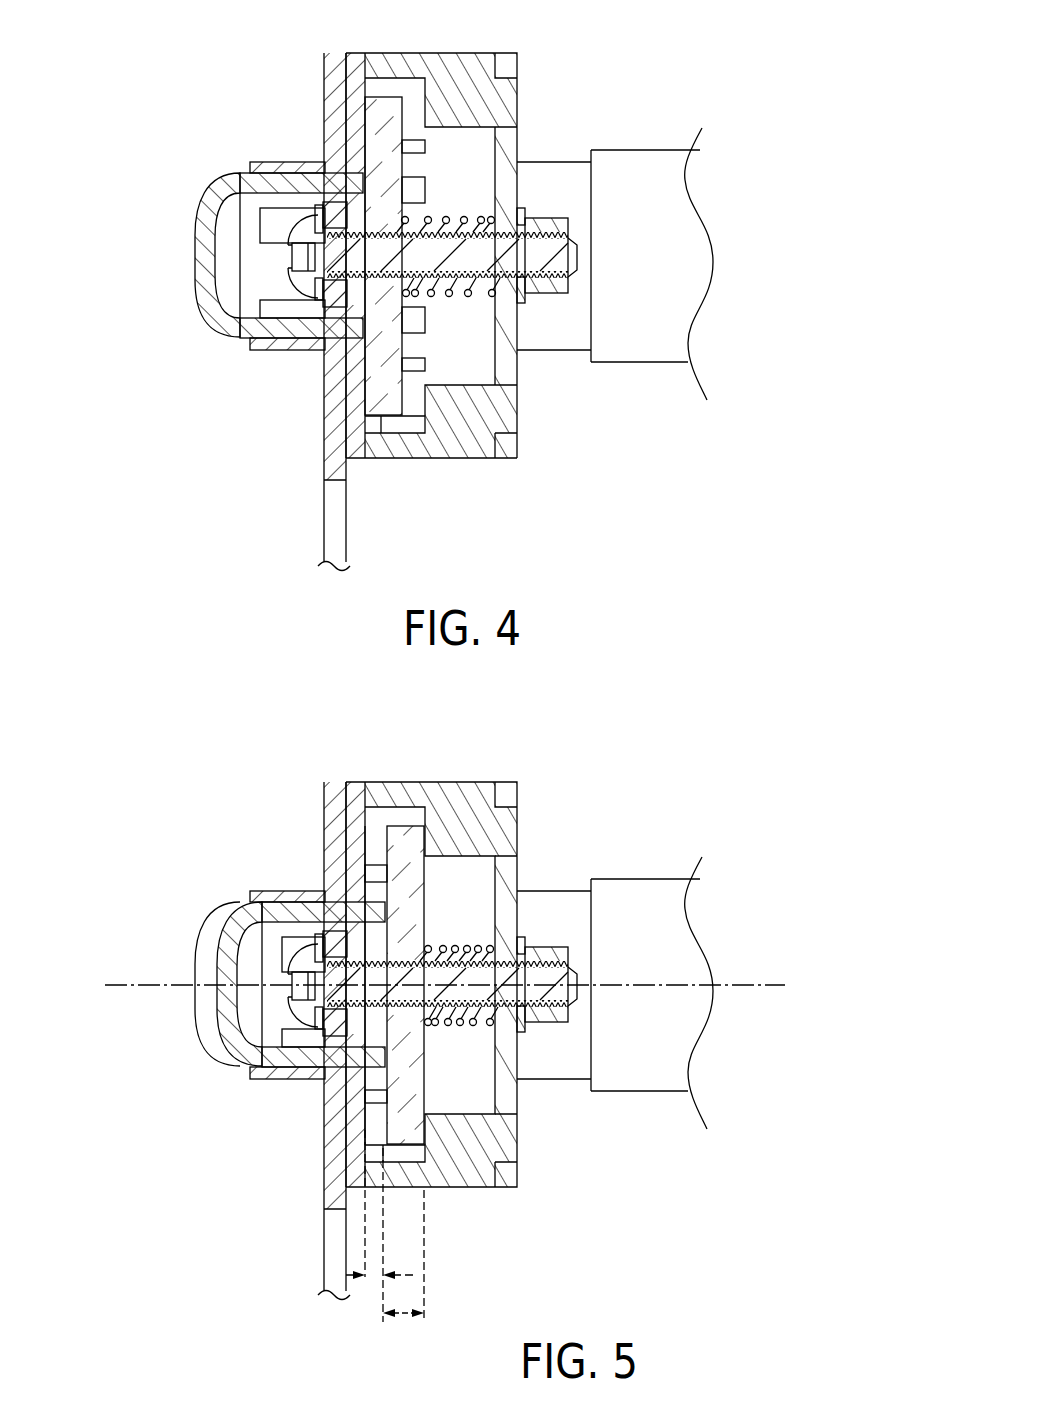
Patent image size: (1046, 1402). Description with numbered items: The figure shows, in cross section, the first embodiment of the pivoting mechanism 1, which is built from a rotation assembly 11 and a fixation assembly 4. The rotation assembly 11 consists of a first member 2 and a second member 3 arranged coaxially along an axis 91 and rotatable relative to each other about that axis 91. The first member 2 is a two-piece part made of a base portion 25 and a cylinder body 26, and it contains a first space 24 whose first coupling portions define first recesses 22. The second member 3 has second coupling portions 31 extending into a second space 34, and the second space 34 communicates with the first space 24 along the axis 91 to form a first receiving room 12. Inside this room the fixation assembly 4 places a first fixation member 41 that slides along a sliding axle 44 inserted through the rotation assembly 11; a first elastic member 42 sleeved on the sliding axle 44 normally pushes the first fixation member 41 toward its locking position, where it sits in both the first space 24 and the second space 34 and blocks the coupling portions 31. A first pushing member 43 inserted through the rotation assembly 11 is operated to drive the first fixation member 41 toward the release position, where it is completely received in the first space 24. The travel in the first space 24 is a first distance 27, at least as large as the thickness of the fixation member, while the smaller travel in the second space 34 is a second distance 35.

In FIG. 4, the pivoting mechanism 1 is at (296, 60).
In FIG. 4, the first member 2 is at (372, 53).
In FIG. 4, the second member 3 is at (648, 40).
In FIG. 4, the fixation assembly 4 is at (273, 258).
In FIG. 4, the rotation assembly 11 is at (683, 20).
In FIG. 5, the first receiving room 12 is at (428, 918).
In FIG. 4, the first recess 22 is at (416, 425).
In FIG. 5, the first space 24 is at (430, 942).
In FIG. 4, the base portion 25 is at (516, 68).
In FIG. 4, the cylinder body 26 is at (457, 57).
In FIG. 5, the first distance 27 is at (433, 1259).
In FIG. 4, the second coupling portion 31 is at (357, 431).
In FIG. 5, the second space 34 is at (383, 933).
In FIG. 5, the second distance 35 is at (356, 1254).
In FIG. 4, the first fixation member 41 is at (372, 400).
In FIG. 5, the first fixation member 41 is at (280, 985).
In FIG. 5, the first elastic member 42 is at (512, 923).
In FIG. 4, the first pushing member 43 is at (198, 223).
In FIG. 5, the first pushing member 43 is at (265, 911).
In FIG. 4, the sliding axle 44 is at (332, 289).
In FIG. 5, the axis 91 is at (419, 884).